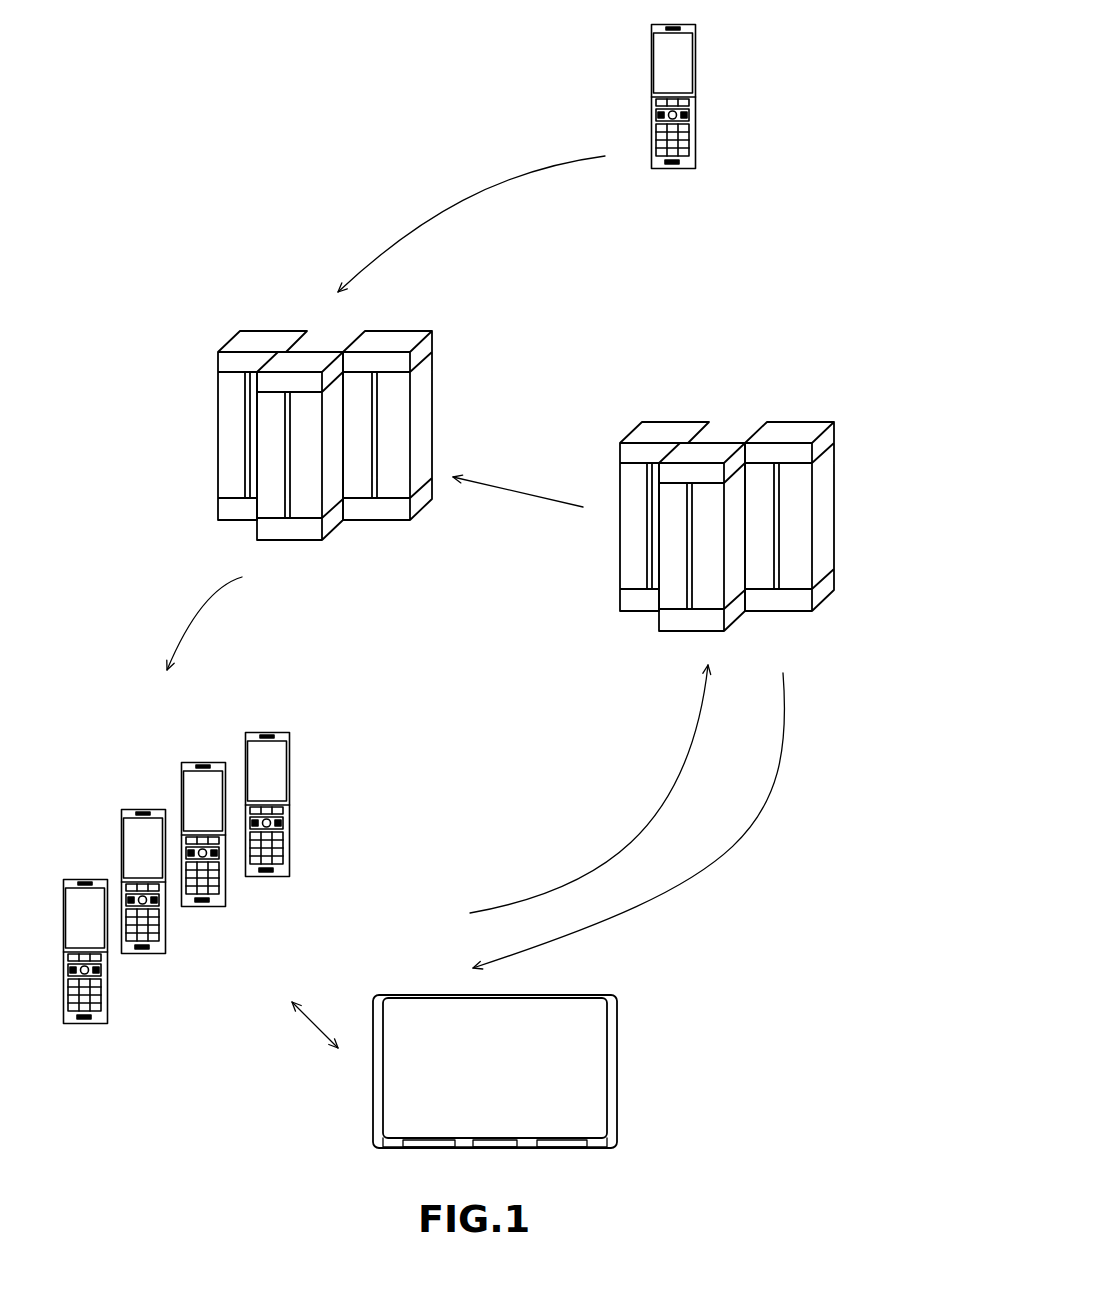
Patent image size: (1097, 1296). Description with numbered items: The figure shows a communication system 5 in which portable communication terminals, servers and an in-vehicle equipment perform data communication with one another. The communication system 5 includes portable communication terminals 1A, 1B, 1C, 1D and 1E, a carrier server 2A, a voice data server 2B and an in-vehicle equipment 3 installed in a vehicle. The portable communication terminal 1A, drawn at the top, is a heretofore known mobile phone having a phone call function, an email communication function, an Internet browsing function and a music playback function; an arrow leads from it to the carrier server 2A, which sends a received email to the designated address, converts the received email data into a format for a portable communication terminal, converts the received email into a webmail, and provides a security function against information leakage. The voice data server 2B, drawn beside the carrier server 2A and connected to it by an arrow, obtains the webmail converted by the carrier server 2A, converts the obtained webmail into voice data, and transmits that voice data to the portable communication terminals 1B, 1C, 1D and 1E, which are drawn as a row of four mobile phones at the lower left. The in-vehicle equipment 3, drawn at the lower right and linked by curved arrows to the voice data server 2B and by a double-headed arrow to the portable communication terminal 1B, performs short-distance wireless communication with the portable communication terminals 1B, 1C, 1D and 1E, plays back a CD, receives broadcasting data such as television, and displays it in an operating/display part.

The communication system 5 is at (221, 80).
The portable communication terminal 1A is at (730, 112).
The portable communication terminal 1B is at (265, 895).
The portable communication terminal 1C is at (209, 918).
The portable communication terminal 1D is at (145, 965).
The portable communication terminal 1E is at (85, 1030).
The carrier server 2A is at (200, 362).
The voice data server 2B is at (847, 438).
The in-vehicle equipment 3 is at (637, 1037).